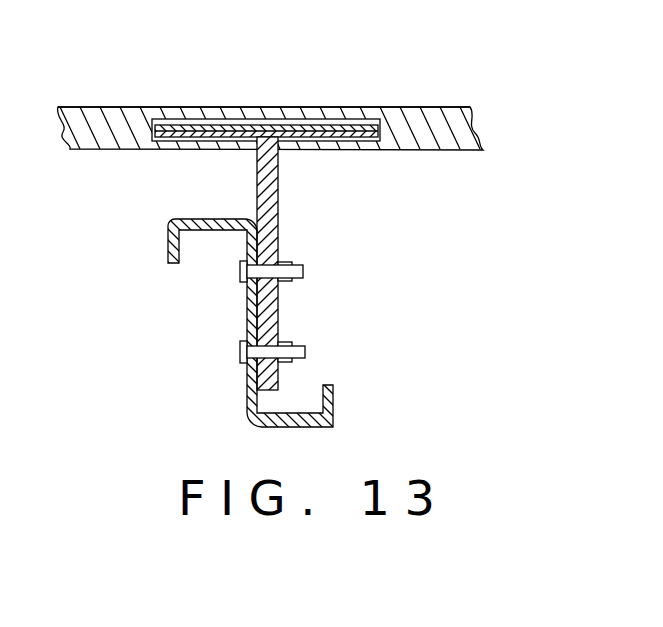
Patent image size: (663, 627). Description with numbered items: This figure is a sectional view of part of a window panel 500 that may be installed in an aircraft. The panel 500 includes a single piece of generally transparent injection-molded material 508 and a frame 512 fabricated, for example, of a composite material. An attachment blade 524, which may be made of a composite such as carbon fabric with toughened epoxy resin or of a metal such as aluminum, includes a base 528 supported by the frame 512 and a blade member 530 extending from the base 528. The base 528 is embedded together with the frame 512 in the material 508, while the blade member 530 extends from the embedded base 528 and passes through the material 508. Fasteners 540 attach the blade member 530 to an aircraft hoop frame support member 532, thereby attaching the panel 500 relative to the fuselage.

The window panel 500 is at (452, 150).
The injection-molded material 508 is at (150, 107).
The frame 512 is at (335, 119).
The base 528 is at (203, 138).
The attachment blade 524 is at (279, 210).
The aircraft hoop frame support member 532 is at (246, 312).
The blade member 530 is at (280, 310).
The fasteners 540 is at (306, 349).